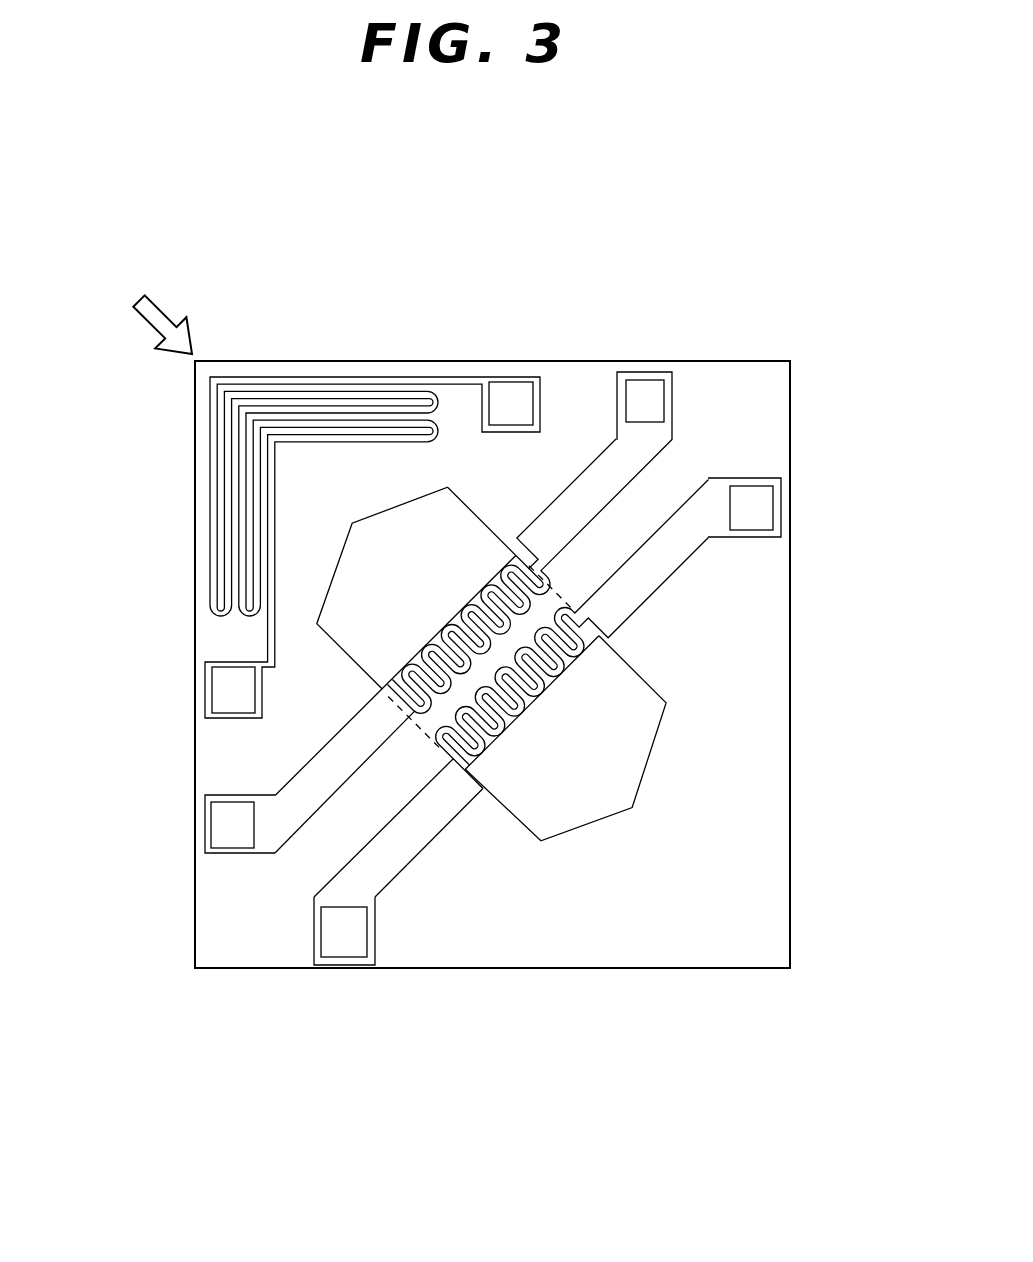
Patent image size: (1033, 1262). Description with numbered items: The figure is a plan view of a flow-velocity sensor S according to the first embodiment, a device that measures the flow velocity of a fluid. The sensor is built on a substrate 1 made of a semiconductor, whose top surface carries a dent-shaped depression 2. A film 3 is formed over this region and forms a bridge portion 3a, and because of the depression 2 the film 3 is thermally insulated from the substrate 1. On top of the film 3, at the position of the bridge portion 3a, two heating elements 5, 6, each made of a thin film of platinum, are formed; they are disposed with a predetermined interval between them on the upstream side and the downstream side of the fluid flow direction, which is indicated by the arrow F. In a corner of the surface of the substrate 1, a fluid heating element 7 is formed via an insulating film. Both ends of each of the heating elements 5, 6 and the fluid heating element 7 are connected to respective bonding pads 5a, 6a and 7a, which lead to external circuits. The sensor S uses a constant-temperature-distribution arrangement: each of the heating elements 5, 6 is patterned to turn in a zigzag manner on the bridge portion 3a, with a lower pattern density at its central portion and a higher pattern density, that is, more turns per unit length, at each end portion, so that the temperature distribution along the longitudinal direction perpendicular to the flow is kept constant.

The substrate 1 is at (792, 842).
The depression 2 is at (593, 797).
The film 3 is at (452, 633).
The bridge portion 3a is at (510, 552).
The heating element 5 is at (438, 645).
The bonding pads 5a is at (227, 823).
The heating element 6 is at (498, 702).
The bonding pads 6a is at (757, 497).
The fluid heating element 7 is at (300, 392).
The bonding pads 7a is at (507, 393).
The flow-velocity sensor S is at (800, 326).
The direction of fluid flow F is at (144, 297).